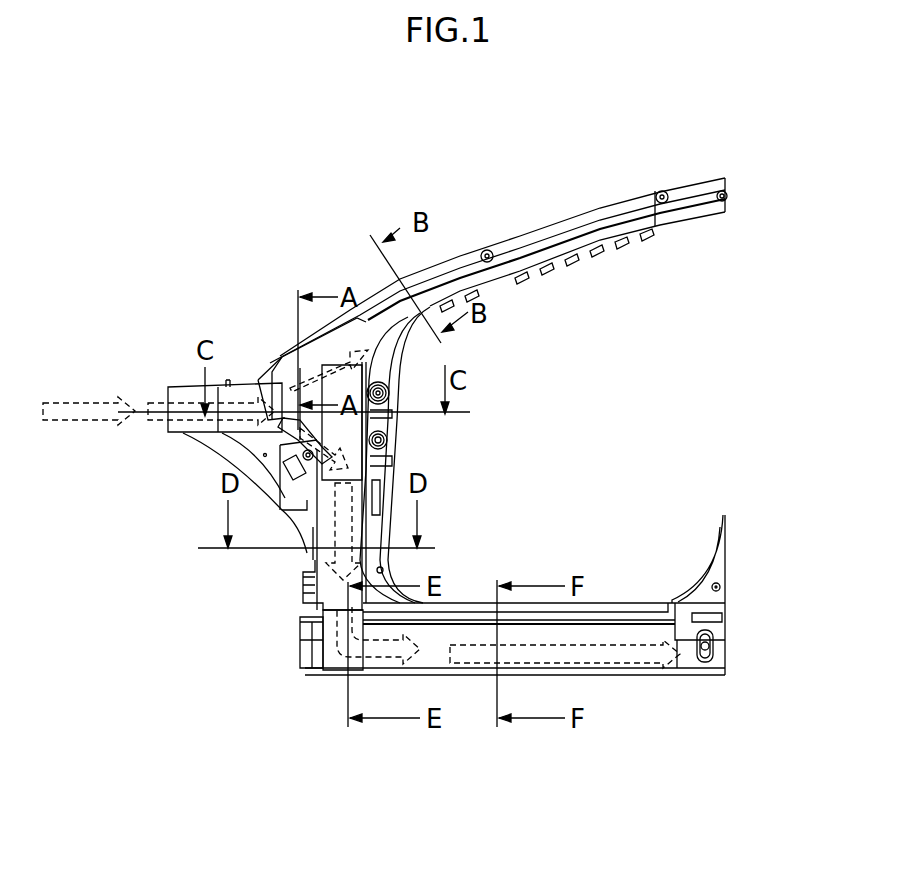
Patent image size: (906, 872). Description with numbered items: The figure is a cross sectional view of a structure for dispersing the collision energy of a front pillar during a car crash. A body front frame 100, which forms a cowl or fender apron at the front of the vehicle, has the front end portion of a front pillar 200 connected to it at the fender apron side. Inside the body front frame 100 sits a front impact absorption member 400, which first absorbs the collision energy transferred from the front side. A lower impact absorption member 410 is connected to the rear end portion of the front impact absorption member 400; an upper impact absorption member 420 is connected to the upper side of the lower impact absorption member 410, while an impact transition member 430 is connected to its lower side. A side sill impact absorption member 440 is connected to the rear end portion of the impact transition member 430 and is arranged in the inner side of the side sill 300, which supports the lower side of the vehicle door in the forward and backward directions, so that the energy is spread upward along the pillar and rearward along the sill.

The body front frame 100 is at (213, 462).
The front pillar 200 is at (527, 222).
The side sill 300 is at (620, 680).
The front impact absorption member 400 is at (283, 407).
The lower impact absorption member 410 is at (330, 506).
The upper impact absorption member 420 is at (388, 313).
The impact transition member 430 is at (338, 657).
The side sill impact absorption member 440 is at (665, 632).